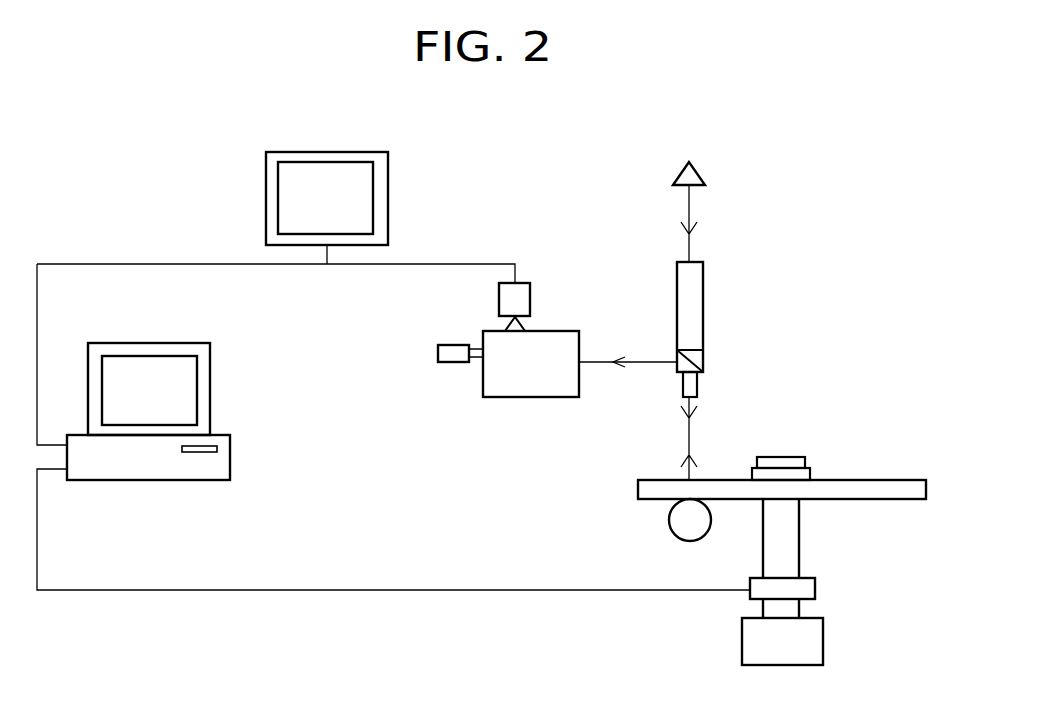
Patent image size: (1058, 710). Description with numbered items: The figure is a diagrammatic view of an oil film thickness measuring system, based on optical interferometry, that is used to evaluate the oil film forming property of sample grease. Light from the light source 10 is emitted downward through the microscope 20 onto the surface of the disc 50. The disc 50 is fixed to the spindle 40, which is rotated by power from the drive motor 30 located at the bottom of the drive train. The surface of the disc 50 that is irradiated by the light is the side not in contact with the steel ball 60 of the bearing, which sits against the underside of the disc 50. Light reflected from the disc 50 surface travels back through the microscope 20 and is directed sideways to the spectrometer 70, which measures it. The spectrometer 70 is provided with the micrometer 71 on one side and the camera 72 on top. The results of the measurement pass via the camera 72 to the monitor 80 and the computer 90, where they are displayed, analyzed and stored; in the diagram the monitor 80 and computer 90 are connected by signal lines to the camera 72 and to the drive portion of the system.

The light source 10 is at (692, 177).
The microscope 20 is at (694, 310).
The drive motor 30 is at (805, 642).
The spindle 40 is at (785, 553).
The disc 50 is at (847, 488).
The steel ball 60 is at (686, 522).
The spectrometer 70 is at (530, 384).
The micrometer 71 is at (454, 353).
The camera 72 is at (520, 302).
The monitor 80 is at (380, 187).
The computer 90 is at (200, 383).